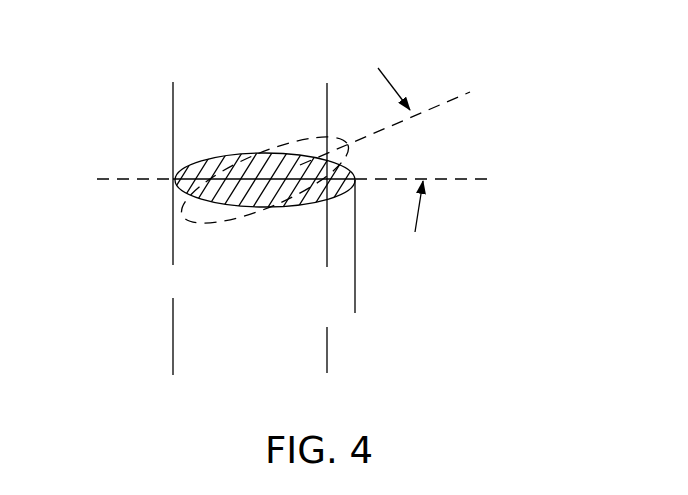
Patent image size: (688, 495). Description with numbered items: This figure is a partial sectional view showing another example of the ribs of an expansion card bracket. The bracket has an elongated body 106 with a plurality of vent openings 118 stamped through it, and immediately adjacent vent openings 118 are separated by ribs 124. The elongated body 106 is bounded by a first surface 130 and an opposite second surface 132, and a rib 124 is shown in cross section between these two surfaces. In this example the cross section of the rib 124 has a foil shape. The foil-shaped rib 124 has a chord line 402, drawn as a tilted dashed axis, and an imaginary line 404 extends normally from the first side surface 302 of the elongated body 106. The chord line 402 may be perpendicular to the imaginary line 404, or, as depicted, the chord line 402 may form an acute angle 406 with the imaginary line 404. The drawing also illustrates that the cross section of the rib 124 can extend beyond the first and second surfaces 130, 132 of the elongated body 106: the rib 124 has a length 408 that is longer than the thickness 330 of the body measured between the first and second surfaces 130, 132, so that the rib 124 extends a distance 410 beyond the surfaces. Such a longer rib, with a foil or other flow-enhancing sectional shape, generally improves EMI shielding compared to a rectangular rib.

The elongated body 106 is at (173, 97).
The vent openings 118 is at (220, 98).
The ribs 124 is at (258, 156).
The first surface 130 is at (173, 243).
The second surface 132 is at (327, 97).
The first side surface 302 is at (177, 167).
The width dimension 330 is at (174, 352).
The chord line 402 is at (440, 100).
The imaginary line 404 is at (118, 180).
The acute angle 406 is at (416, 186).
The length 408 is at (354, 302).
The distance 410 is at (295, 249).